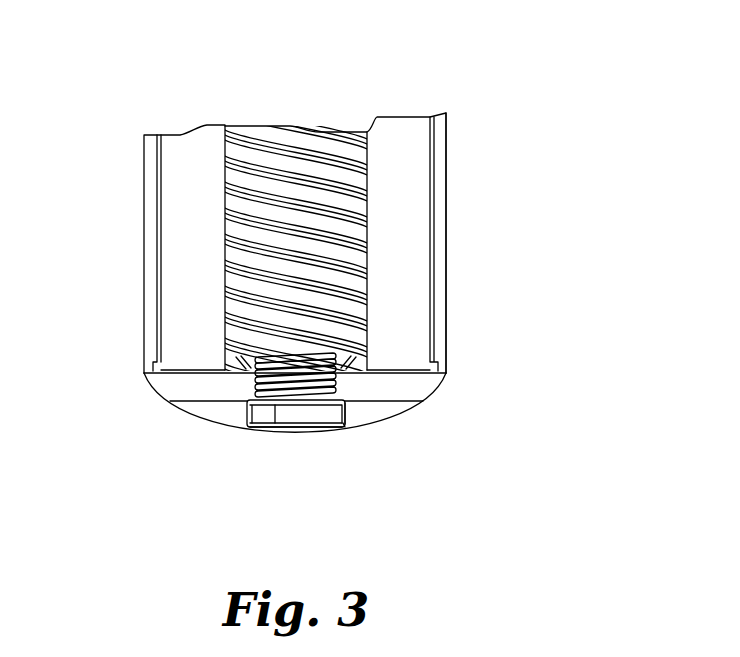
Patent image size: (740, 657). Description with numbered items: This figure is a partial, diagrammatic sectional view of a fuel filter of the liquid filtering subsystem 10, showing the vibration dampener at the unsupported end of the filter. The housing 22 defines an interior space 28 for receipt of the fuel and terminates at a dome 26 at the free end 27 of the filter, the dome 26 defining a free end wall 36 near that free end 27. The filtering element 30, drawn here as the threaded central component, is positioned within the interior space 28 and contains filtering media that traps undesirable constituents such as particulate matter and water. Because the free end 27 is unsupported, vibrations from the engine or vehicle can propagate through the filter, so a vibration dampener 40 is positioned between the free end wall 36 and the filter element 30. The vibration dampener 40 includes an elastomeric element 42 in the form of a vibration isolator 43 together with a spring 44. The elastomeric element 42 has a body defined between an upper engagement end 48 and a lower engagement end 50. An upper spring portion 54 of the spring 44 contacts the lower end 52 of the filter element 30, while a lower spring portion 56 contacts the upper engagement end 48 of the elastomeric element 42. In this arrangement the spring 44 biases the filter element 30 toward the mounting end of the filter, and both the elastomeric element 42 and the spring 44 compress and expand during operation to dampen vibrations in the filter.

The liquid filtering subsystem 10 is at (477, 85).
The housing 22 is at (448, 185).
The dome 26 is at (428, 408).
The free end 27 is at (120, 391).
The interior space 28 is at (180, 216).
The filtering element 30 is at (353, 223).
The free end wall 36 is at (173, 415).
The vibration dampener 40 is at (238, 410).
The elastomeric element 42 is at (346, 425).
The vibration isolator 43 is at (257, 423).
The spring 44 is at (353, 383).
The upper engagement end 48 is at (352, 409).
The lower engagement end 50 is at (325, 438).
The lower end 52 is at (243, 372).
The upper spring portion 54 is at (331, 352).
The lower spring portion 56 is at (275, 412).